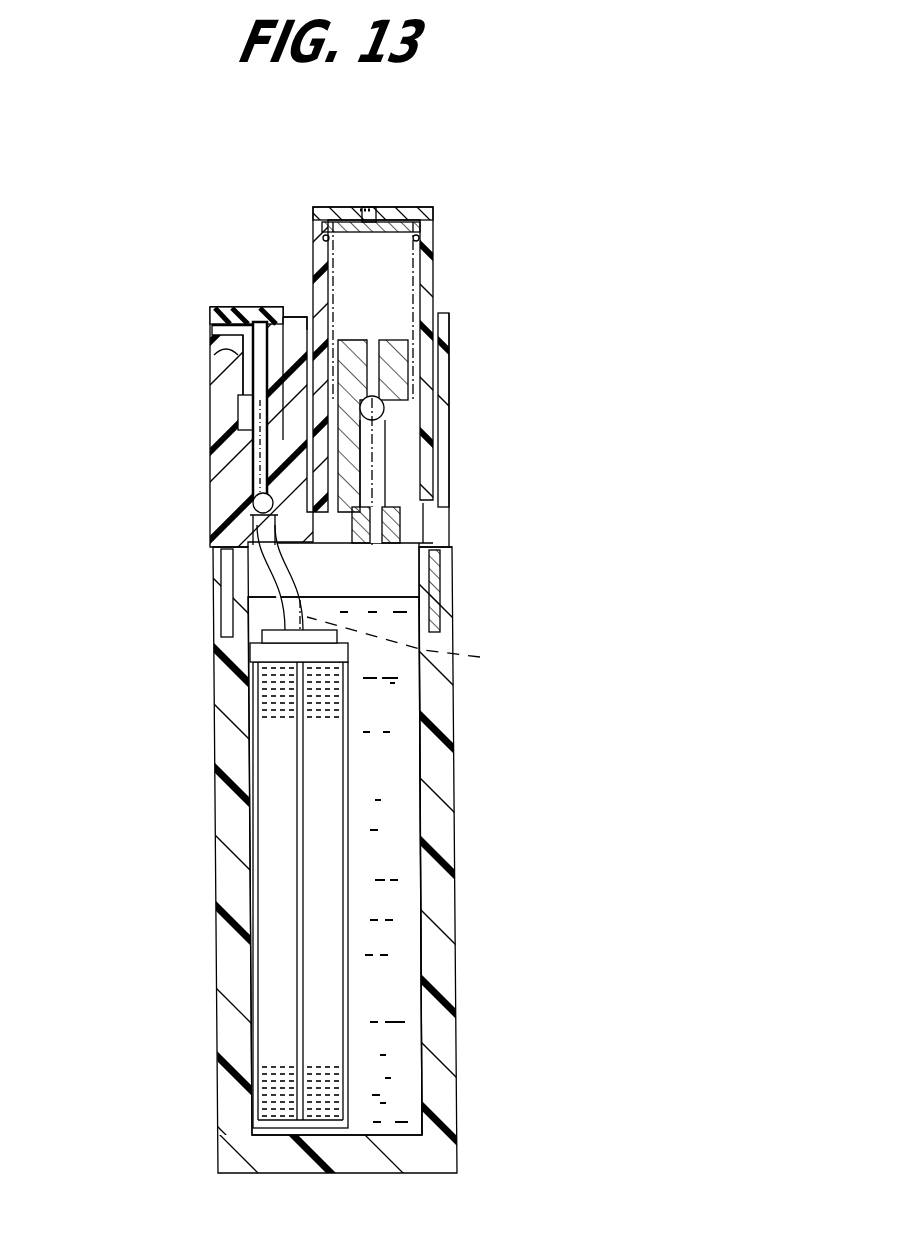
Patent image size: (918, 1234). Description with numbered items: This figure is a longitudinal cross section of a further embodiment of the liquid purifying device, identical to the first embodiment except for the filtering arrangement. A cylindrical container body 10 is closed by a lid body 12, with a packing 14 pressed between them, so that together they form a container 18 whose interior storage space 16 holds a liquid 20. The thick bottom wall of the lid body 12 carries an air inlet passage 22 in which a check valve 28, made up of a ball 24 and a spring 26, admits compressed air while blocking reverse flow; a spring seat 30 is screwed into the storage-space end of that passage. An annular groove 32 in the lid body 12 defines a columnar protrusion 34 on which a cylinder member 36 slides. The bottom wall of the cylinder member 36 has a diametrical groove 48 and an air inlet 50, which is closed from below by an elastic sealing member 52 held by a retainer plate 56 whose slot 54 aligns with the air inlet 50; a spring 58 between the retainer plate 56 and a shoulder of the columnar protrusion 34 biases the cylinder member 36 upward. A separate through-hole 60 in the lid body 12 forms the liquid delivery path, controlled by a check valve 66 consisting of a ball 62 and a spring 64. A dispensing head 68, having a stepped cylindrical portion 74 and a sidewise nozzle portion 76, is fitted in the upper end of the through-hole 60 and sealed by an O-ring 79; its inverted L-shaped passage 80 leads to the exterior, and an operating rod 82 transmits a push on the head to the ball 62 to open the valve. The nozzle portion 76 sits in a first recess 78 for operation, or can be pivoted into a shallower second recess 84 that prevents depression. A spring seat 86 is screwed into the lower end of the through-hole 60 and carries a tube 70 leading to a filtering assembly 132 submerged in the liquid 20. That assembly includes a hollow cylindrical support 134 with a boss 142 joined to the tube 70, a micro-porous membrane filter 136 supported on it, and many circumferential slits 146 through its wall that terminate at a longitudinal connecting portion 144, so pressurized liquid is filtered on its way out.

The container body 10 is at (207, 930).
The lid body 12 is at (178, 458).
The packing 14 is at (430, 548).
The interior storage space 16 is at (392, 861).
The container 18 is at (162, 775).
The liquid 20 is at (400, 1013).
The air inlet passage 22 is at (386, 455).
The ball 24 is at (382, 405).
The spring 26 is at (400, 490).
The check valve 28 is at (410, 425).
The spring seat 30 is at (420, 553).
The annular groove 32 is at (436, 507).
The columnar protrusion 34 is at (397, 355).
The cylinder member 36 is at (433, 276).
The groove 48 is at (366, 208).
The air inlet 50 is at (371, 208).
The sealing member 52 is at (393, 277).
The slot 54 is at (387, 233).
The retainer plate 56 is at (402, 237).
The spring 58 is at (321, 238).
The through-hole 60 is at (252, 445).
The ball 62 is at (256, 505).
The spring 64 is at (263, 545).
The check valve 66 is at (290, 522).
The dispensing head 68 is at (246, 298).
The tube 70 is at (262, 640).
The stepped cylindrical portion 74 is at (250, 378).
The nozzle portion 76 is at (236, 318).
The first recess 78 is at (230, 353).
The O-ring 79 is at (246, 400).
The L-shaped passage 80 is at (226, 330).
The operating rod 82 is at (264, 480).
The second recess 84 is at (212, 342).
The spring seat 86 is at (230, 600).
The filtering assembly 132 is at (372, 764).
The hollow cylindrical support 134 is at (258, 665).
The micro-porous membrane filter 136 is at (224, 895).
The boss 142 is at (419, 636).
The connecting portion 144 is at (296, 882).
The slits 146 is at (253, 700).